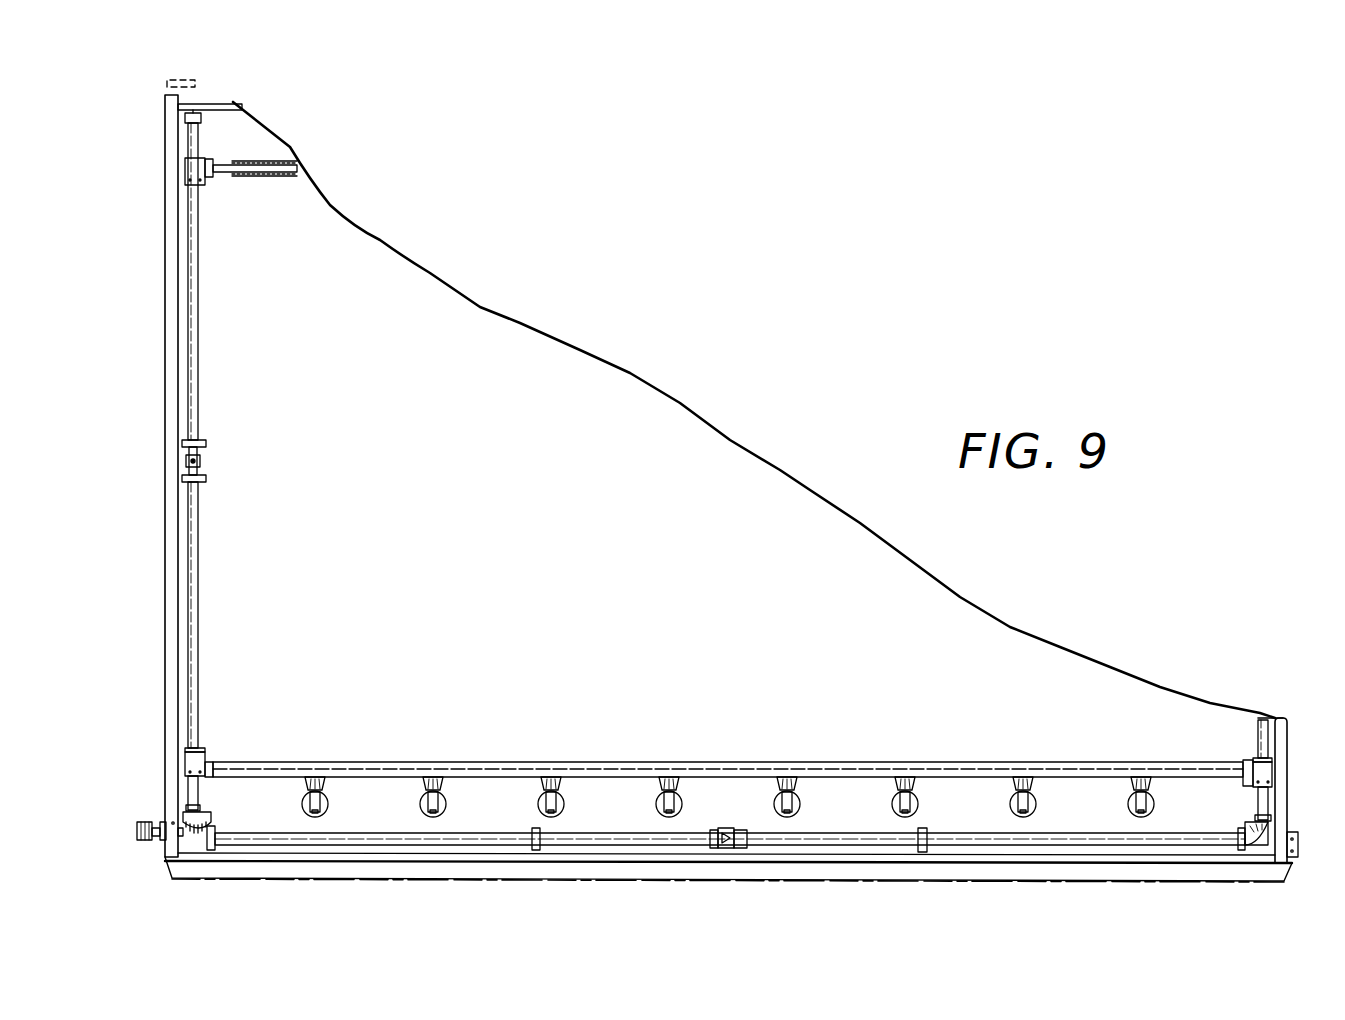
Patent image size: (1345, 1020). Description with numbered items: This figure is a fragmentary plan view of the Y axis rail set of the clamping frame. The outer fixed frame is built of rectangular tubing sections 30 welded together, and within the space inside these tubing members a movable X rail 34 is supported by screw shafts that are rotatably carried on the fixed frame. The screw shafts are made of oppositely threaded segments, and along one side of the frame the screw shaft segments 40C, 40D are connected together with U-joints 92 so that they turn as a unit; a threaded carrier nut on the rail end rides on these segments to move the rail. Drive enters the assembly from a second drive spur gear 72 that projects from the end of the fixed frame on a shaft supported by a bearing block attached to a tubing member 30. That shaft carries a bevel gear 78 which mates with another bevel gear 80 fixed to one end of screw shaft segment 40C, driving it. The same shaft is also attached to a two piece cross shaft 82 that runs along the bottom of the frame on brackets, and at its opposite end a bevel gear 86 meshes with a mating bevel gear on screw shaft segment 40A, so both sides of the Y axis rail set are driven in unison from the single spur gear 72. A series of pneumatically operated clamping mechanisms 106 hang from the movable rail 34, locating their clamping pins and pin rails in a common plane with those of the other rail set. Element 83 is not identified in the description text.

The rectangular tubing section 30 is at (165, 605).
The X rail 34 is at (297, 161).
The screw shaft segment 40A is at (1256, 736).
The screw shaft segment 40C is at (200, 567).
The screw shaft segment 40D is at (200, 305).
The second drive spur gear 72 is at (140, 823).
The bevel gear 78 is at (208, 824).
The bevel gear 80 is at (201, 817).
The cross shaft 82 is at (620, 835).
The pipe coupling 83 is at (718, 832).
The bevel gear 86 is at (1250, 827).
The U-joint 92 is at (207, 460).
The clamping mechanism 106 is at (443, 807).